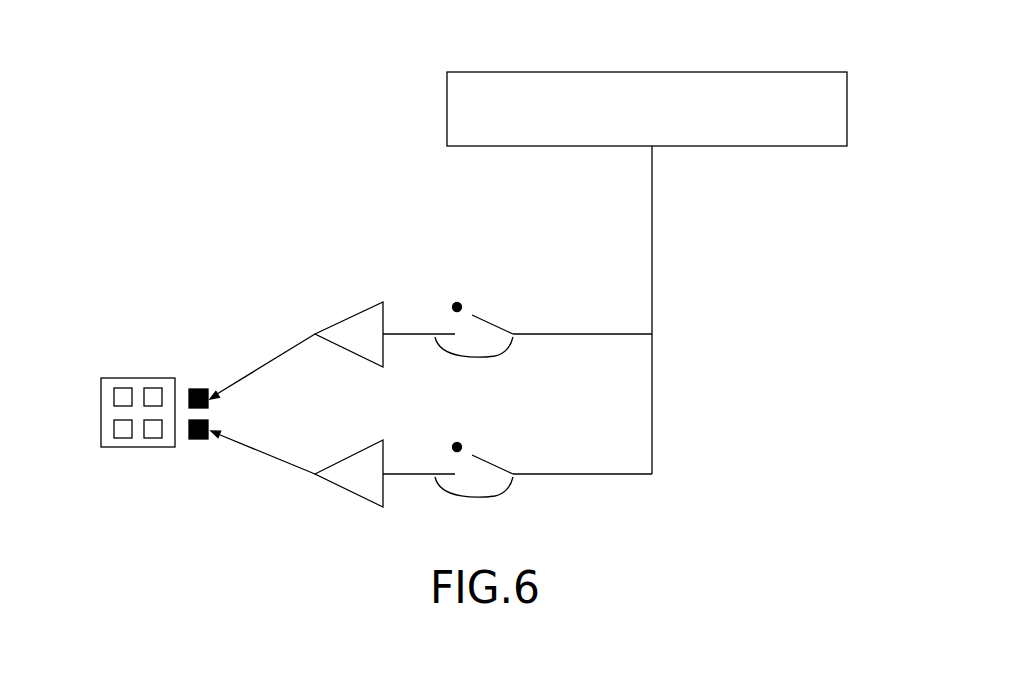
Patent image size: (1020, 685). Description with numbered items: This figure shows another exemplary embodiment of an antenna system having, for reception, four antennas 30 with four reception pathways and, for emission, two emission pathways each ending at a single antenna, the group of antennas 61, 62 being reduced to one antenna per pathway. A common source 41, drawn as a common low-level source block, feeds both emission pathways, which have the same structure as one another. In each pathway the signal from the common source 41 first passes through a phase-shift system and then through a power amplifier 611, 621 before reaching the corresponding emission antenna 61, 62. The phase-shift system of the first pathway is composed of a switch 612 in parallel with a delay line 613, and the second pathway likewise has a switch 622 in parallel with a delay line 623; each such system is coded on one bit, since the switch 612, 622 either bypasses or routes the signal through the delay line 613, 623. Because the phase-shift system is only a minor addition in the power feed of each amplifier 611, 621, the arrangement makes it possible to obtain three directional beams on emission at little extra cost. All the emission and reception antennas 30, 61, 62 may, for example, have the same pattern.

The reception antennas 30 is at (122, 428).
The common source 41 is at (707, 72).
The first emission antenna 61 is at (212, 392).
The second emission antenna 62 is at (202, 440).
The power amplifier 611 is at (383, 320).
The switch 612 is at (475, 315).
The delay line 613 is at (498, 358).
The power amplifier 621 is at (383, 460).
The switch 622 is at (474, 453).
The delay line 623 is at (498, 498).